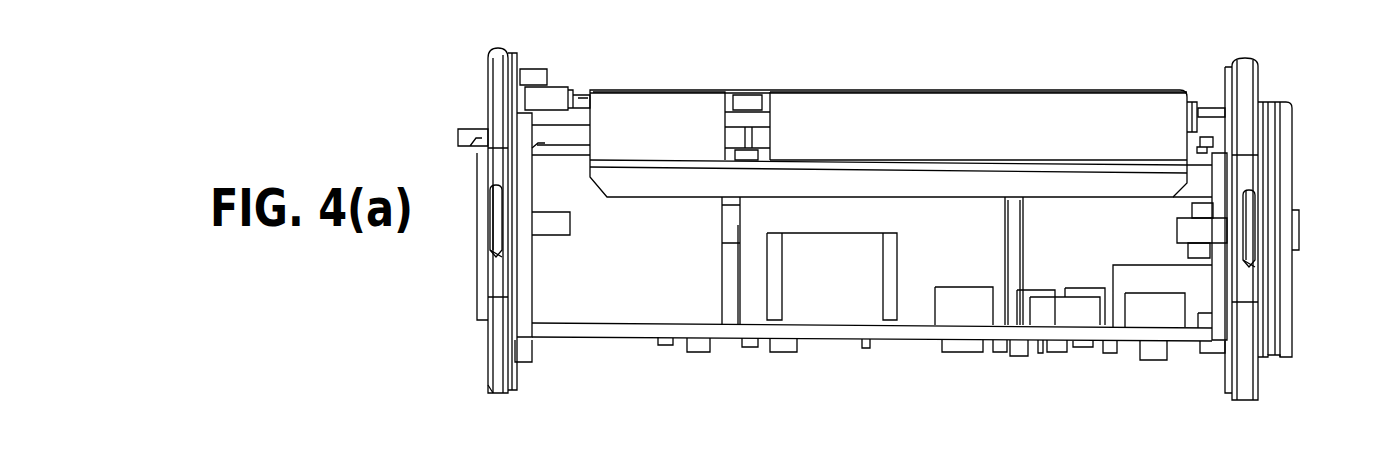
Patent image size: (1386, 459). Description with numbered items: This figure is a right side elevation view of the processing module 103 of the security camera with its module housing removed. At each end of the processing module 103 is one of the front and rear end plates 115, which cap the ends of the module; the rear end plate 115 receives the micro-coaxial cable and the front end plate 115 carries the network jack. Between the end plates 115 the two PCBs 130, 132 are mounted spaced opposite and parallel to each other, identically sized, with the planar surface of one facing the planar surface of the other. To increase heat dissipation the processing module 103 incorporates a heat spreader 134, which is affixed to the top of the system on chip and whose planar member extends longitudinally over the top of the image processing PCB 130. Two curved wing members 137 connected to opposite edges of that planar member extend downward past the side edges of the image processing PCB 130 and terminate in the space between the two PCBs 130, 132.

The processing module 103 is at (1313, 131).
The end plates 115 is at (502, 380).
The image processing PCB 130 is at (1192, 118).
The PCB 132 is at (923, 327).
The heat spreader 134 is at (888, 104).
The wing members 137 is at (870, 77).